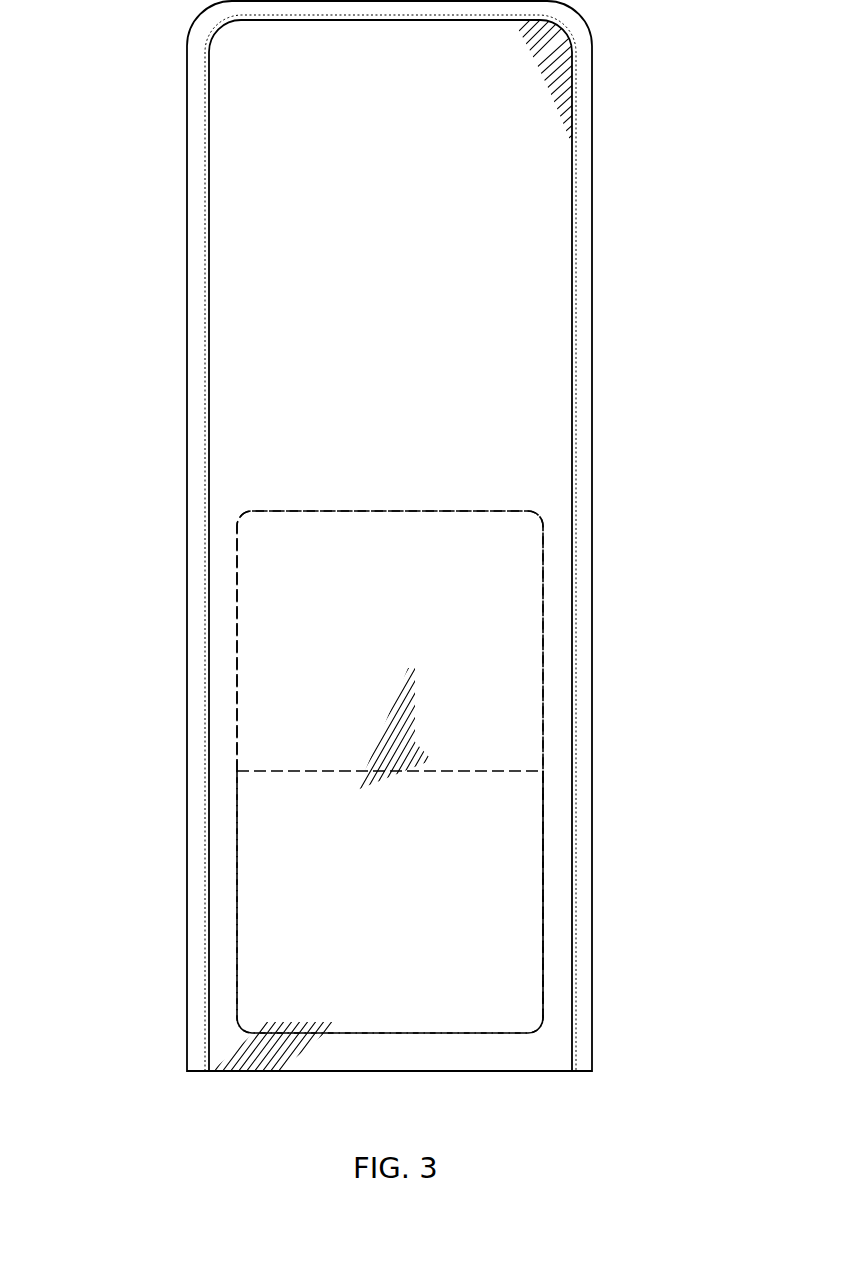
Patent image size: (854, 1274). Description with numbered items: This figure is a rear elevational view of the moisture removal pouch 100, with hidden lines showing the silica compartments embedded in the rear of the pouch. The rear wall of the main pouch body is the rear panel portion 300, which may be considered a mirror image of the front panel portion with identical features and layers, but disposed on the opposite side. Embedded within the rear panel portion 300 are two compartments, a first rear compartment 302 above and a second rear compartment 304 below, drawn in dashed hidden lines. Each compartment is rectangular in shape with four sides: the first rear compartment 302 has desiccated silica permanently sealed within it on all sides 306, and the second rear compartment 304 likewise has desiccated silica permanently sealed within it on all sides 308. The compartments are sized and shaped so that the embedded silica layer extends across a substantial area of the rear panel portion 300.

The moisture removal pouch 100 is at (427, 1133).
The rear panel portion 300 is at (215, 741).
The first rear compartment 302 is at (259, 654).
The second rear compartment 304 is at (253, 963).
The sides of the first rear compartment 306 is at (535, 603).
The sides of the second rear compartment 308 is at (537, 890).